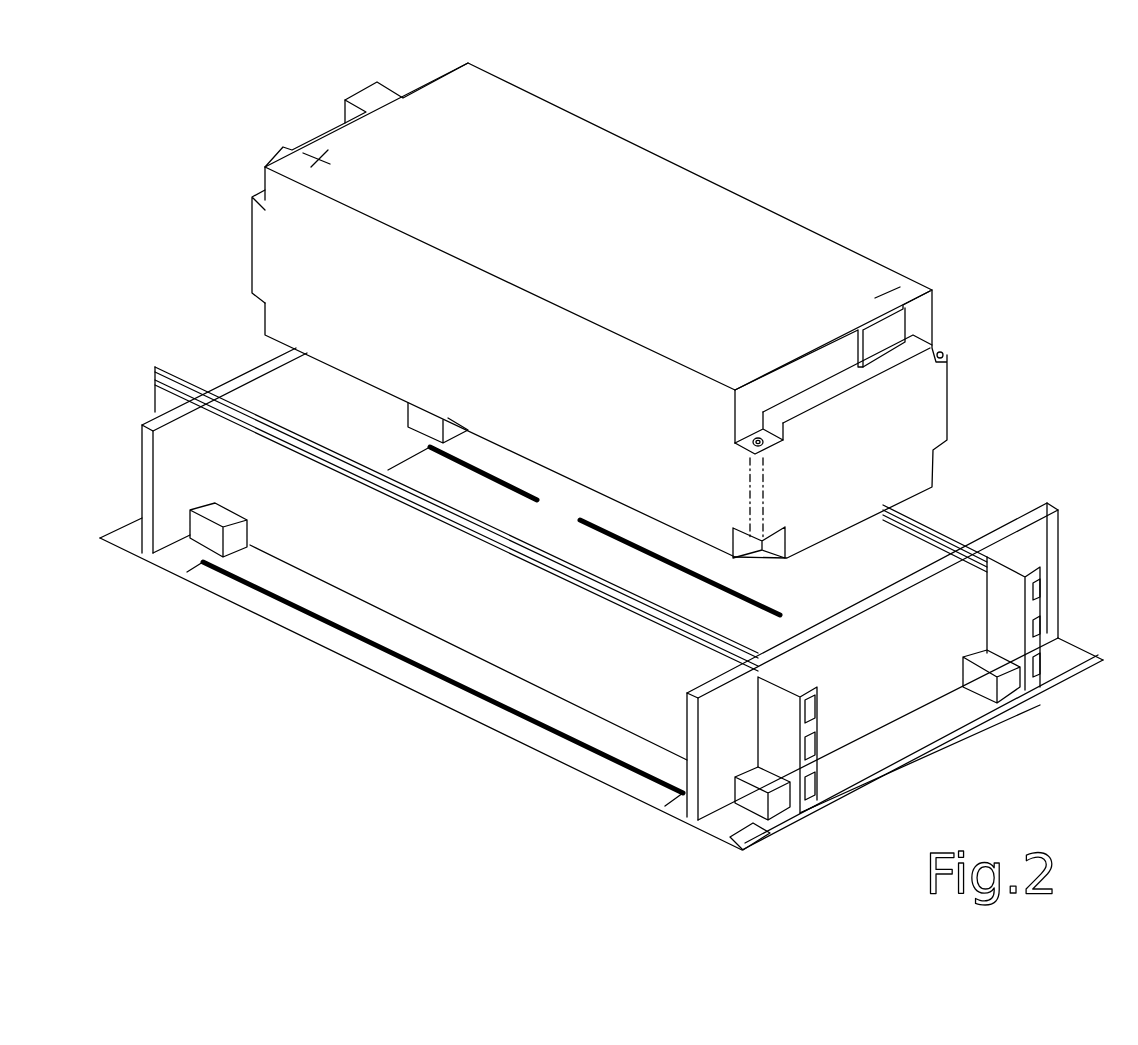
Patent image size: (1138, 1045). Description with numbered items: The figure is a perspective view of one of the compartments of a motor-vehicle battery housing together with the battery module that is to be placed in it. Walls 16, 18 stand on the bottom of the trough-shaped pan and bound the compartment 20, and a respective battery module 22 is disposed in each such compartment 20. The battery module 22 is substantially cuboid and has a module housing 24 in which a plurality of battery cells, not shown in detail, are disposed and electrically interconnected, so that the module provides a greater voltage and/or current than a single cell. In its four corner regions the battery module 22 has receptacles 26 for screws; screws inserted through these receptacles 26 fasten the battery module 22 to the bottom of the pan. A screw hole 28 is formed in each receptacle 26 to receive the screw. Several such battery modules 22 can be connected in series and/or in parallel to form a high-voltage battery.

The wall 16 is at (385, 578).
The wall 18 is at (287, 393).
The compartment 20 is at (580, 520).
The battery module 22 is at (684, 224).
The module housing 24 is at (828, 277).
The receptacle 26 is at (250, 242).
The screw hole 28 is at (752, 440).